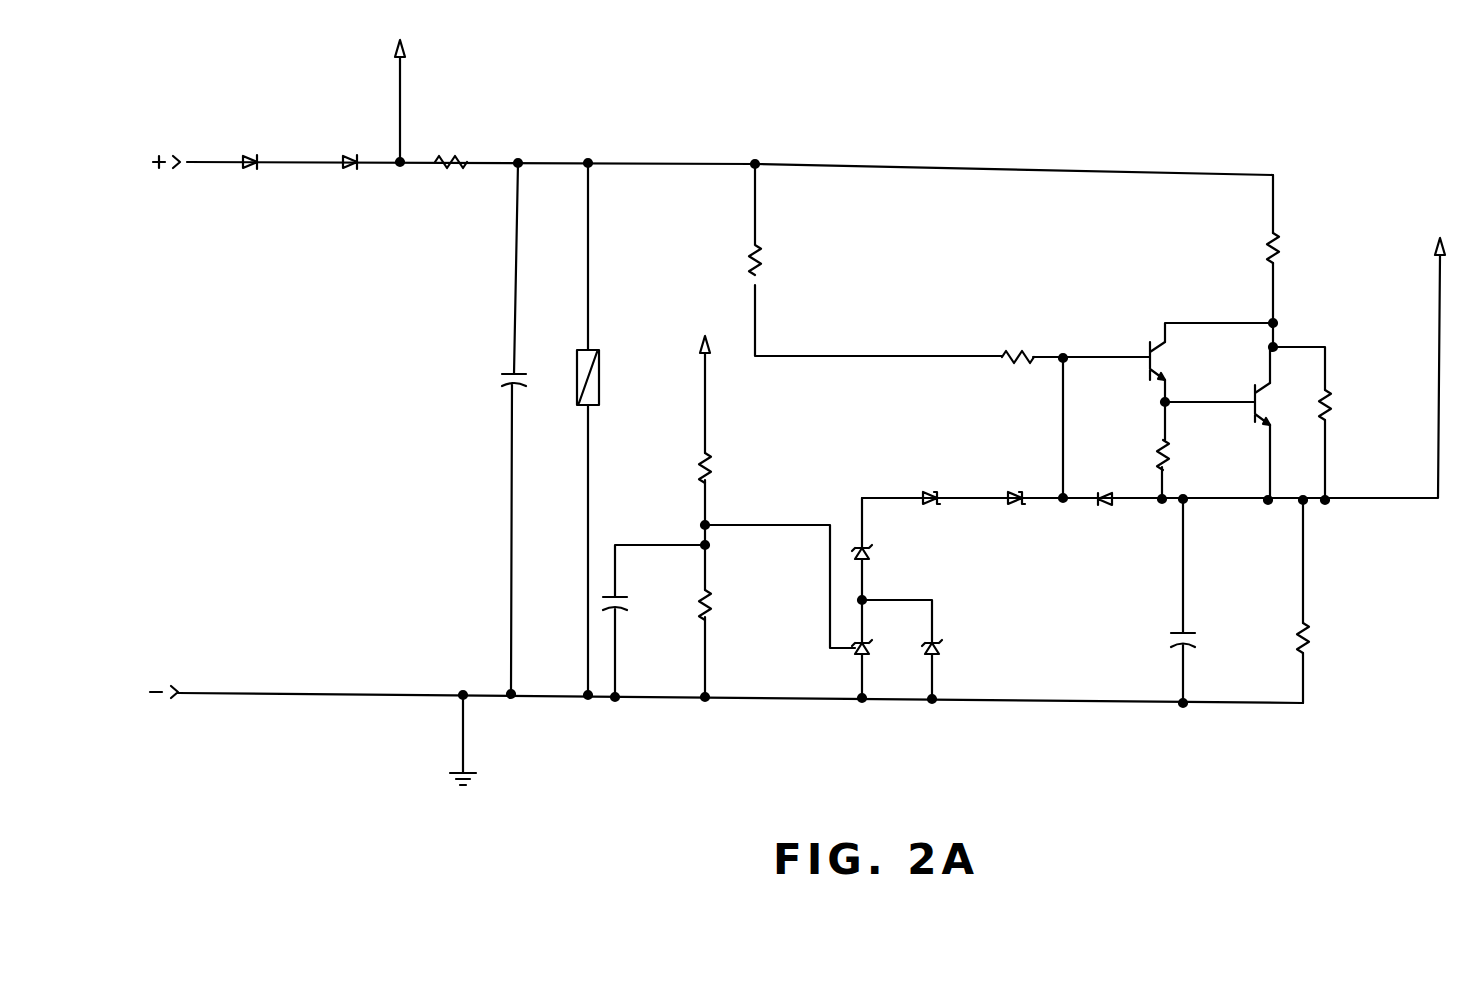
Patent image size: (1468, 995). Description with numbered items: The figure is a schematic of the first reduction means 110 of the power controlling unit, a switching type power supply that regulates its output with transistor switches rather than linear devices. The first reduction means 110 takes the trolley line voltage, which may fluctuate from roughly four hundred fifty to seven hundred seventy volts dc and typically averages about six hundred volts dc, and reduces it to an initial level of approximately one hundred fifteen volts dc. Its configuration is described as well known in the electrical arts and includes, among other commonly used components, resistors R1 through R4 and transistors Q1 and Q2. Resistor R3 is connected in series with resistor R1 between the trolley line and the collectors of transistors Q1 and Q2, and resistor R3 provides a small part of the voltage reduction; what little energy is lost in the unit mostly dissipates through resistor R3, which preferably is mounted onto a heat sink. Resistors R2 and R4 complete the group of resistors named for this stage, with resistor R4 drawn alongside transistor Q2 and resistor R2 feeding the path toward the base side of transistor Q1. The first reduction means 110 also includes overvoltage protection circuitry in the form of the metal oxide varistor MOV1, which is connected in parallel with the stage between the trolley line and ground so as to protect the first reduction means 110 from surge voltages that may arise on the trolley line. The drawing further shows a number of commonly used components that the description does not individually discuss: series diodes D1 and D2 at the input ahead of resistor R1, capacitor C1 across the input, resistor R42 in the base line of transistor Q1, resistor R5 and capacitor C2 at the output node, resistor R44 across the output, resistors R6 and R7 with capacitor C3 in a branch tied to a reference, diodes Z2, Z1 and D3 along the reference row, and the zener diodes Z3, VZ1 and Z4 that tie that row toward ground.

The first reduction means 110 is at (990, 145).
The diode D1 is at (250, 152).
The diode D2 is at (351, 152).
The resistor R1 is at (452, 152).
The capacitor C1 is at (500, 378).
The metal oxide varistor MOV1 is at (601, 362).
The resistor R2 is at (761, 262).
The resistor R42 is at (1019, 350).
The resistor R3 is at (1280, 250).
The transistor Q1 is at (1172, 359).
The transistor Q2 is at (1262, 405).
The resistor R4 is at (1331, 407).
The resistor R5 is at (1168, 458).
The resistor R6 is at (710, 466).
The resistor R7 is at (710, 601).
The capacitor C3 is at (628, 604).
The zener diode Z2 is at (929, 490).
The zener diode Z3 is at (873, 554).
The zener diode Z1 is at (1015, 508).
The diode D3 is at (1105, 509).
The zener diode VZ1 is at (856, 657).
The zener diode Z4 is at (938, 651).
The capacitor C2 is at (1170, 644).
The resistor R44 is at (1309, 643).